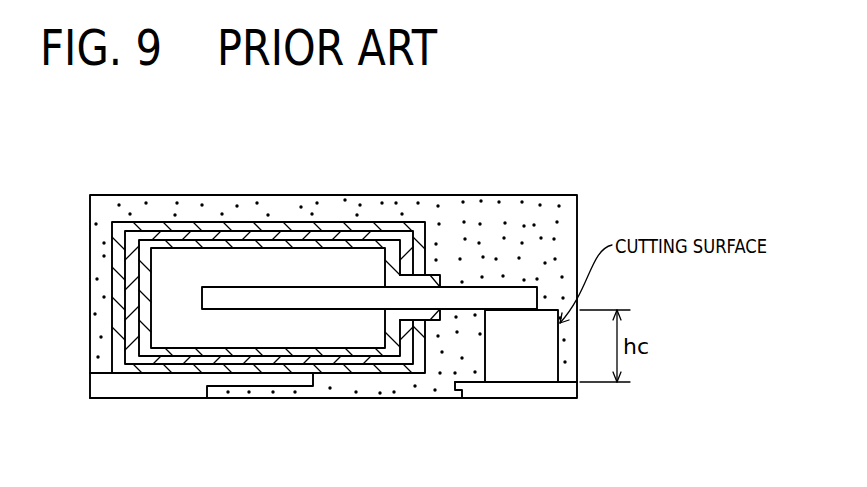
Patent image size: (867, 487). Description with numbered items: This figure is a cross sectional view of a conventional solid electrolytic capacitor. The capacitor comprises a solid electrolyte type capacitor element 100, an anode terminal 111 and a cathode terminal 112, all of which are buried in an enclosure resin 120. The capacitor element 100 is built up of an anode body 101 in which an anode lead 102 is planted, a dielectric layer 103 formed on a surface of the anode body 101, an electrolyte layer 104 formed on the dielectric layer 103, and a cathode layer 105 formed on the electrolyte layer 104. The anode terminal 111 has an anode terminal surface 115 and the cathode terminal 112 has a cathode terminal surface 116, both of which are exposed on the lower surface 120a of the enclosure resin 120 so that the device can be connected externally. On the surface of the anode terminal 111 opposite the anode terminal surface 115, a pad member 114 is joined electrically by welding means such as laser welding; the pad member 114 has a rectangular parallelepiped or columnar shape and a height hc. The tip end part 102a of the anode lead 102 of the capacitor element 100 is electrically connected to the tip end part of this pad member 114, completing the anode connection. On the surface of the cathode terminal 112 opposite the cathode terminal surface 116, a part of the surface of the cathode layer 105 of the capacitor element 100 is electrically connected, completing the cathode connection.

The solid electrolyte type capacitor element 100 is at (442, 143).
The anode body 101 is at (213, 265).
The anode lead 102 is at (238, 298).
The tip end part 102a is at (492, 286).
The dielectric layer 103 is at (275, 243).
The electrolyte layer 104 is at (320, 235).
The cathode layer 105 is at (340, 224).
The anode terminal 111 is at (508, 390).
The cathode terminal 112 is at (153, 388).
The pad member 114 is at (530, 367).
The anode terminal surface 115 is at (473, 400).
The cathode terminal surface 116 is at (115, 400).
The enclosure resin 120 is at (150, 205).
The lower surface 120a is at (338, 400).